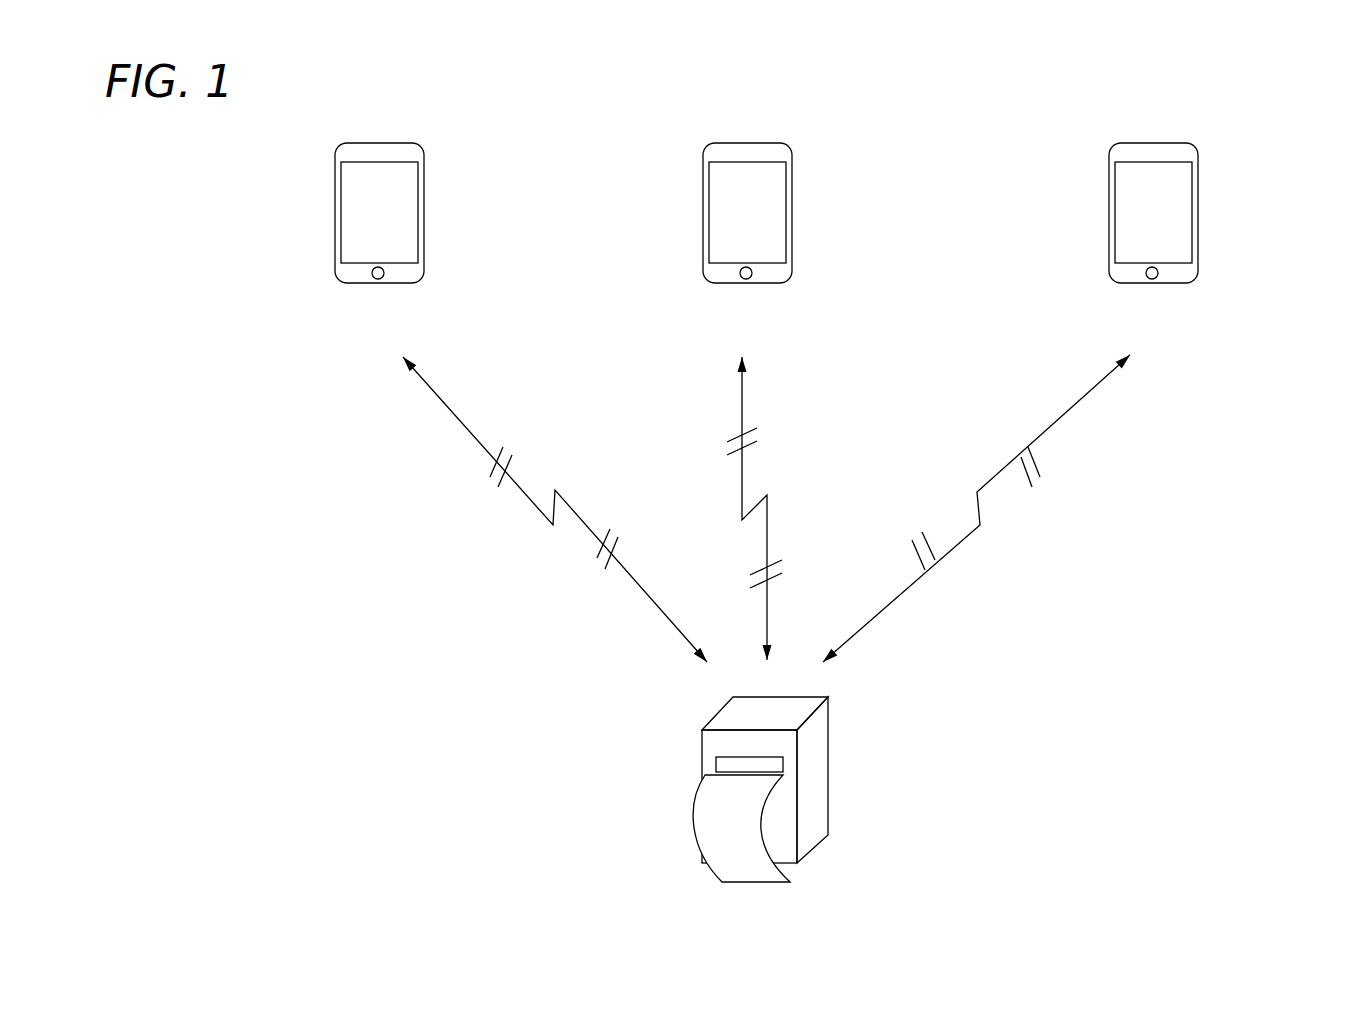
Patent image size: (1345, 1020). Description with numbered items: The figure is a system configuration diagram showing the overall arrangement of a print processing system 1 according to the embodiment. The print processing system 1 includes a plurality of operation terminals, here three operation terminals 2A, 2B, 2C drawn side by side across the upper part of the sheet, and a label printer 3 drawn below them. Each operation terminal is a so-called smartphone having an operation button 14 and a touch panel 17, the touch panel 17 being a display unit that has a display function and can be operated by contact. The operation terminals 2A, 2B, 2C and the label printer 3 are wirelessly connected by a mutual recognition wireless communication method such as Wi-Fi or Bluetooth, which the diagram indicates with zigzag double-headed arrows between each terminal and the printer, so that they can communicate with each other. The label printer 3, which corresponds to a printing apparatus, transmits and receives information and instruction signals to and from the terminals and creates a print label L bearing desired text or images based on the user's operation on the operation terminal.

The print processing system 1 is at (1276, 242).
The operation terminal 2A is at (429, 170).
The operation terminal 2B is at (797, 170).
The operation terminal 2C is at (1203, 170).
The touch panel 17 is at (350, 217).
The operation button 14 is at (380, 280).
The label printer 3 is at (830, 735).
The print label L is at (708, 830).